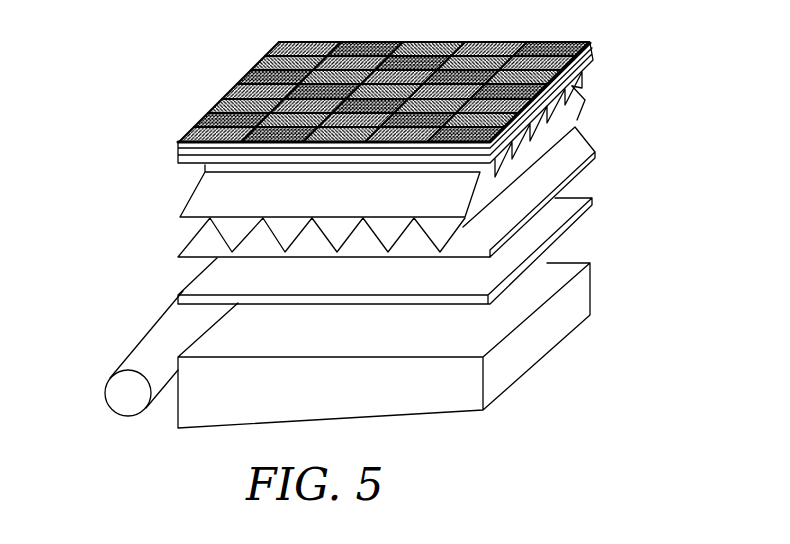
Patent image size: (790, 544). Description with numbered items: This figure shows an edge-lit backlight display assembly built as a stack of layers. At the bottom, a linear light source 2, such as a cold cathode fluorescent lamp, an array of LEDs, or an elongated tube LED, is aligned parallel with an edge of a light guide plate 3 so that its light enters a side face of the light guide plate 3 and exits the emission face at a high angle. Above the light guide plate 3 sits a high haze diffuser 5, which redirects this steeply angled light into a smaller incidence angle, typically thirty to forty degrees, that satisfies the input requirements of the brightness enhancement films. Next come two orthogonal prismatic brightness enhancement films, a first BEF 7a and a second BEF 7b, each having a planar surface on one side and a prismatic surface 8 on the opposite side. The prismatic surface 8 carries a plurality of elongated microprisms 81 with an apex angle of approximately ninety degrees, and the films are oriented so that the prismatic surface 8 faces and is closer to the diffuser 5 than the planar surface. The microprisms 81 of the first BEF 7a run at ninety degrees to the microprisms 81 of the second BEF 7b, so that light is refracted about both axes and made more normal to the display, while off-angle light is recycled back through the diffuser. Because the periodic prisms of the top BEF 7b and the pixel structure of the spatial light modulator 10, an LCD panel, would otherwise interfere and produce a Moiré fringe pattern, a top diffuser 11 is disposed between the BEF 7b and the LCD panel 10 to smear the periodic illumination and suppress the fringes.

The spatial light modulator 10 is at (268, 63).
The top diffuser 11 is at (172, 148).
The second brightness enhancement film 7b is at (575, 105).
The first brightness enhancement film 7a is at (504, 208).
The prismatic surface 8 is at (328, 191).
The elongated microprisms 81 is at (174, 237).
The high haze diffuser 5 is at (350, 276).
The light guide plate 3 is at (356, 329).
The linear light source 2 is at (124, 349).